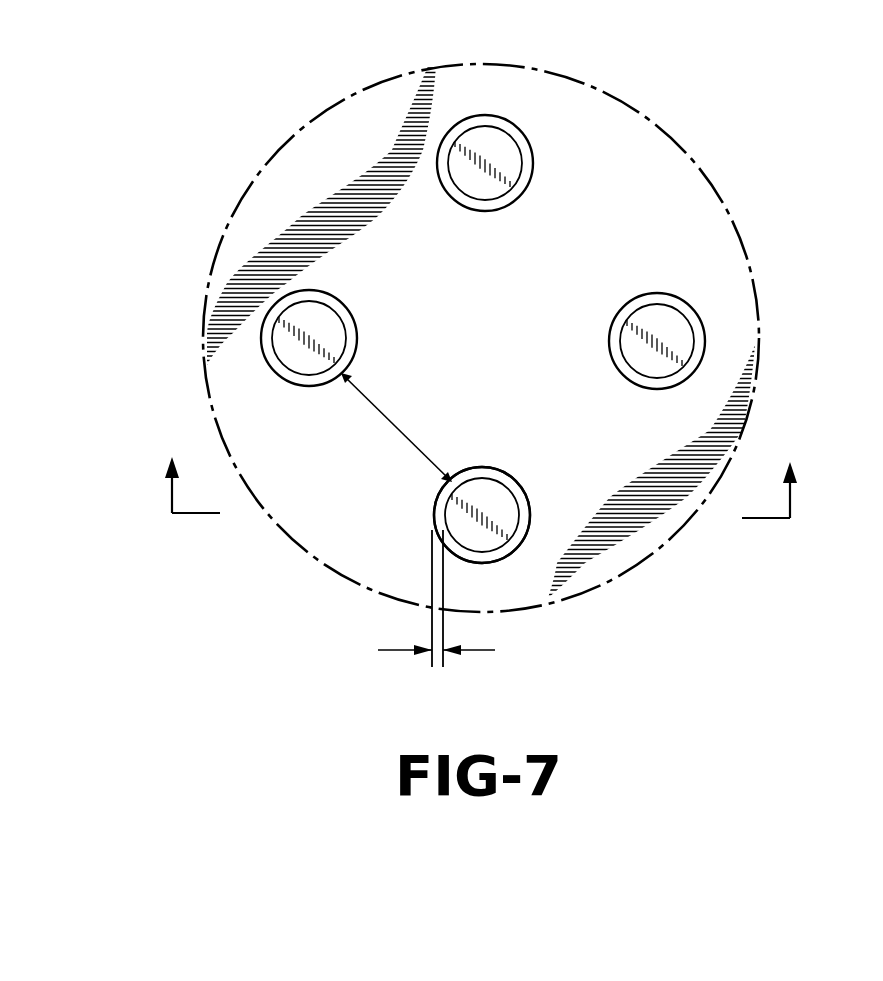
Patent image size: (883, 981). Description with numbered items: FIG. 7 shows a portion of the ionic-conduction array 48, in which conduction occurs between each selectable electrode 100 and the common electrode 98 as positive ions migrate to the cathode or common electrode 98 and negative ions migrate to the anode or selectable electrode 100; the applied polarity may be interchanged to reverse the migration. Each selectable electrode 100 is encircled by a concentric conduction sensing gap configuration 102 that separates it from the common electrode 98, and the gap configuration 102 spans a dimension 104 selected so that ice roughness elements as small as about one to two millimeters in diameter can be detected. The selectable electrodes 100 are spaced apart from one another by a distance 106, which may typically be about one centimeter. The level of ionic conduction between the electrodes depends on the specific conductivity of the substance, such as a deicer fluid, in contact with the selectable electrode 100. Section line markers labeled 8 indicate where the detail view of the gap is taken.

The ionic-conduction array 48 is at (226, 178).
The common electrode 98 is at (695, 202).
The selectable electrode 100 is at (508, 168).
The gap configuration 102 is at (505, 478).
The dimension 104 is at (482, 655).
The distance 106 is at (395, 425).
The section line 8- 8 is at (481, 473).